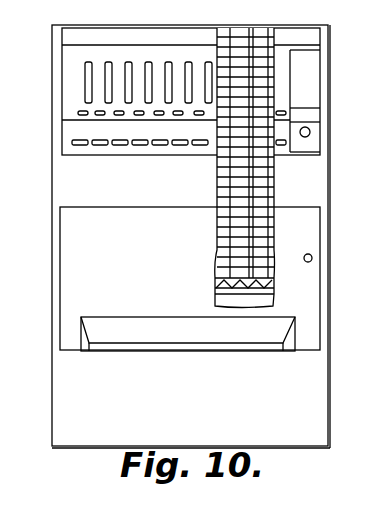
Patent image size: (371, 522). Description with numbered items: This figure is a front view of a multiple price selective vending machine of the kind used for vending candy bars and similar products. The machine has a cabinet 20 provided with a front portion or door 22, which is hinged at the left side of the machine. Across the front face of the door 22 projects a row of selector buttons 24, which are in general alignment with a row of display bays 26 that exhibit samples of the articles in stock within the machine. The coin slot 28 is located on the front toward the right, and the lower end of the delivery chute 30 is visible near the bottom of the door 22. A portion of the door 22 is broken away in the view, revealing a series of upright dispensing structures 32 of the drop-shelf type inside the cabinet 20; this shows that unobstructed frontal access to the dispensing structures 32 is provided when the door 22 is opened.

The cabinet 20 is at (48, 42).
The front portion or door 22 is at (60, 183).
The selector buttons 24 is at (74, 141).
The display bays 26 is at (85, 82).
The coin slot 28 is at (305, 138).
The delivery chute 30 is at (168, 347).
The upright dispensing structures 32 is at (247, 38).